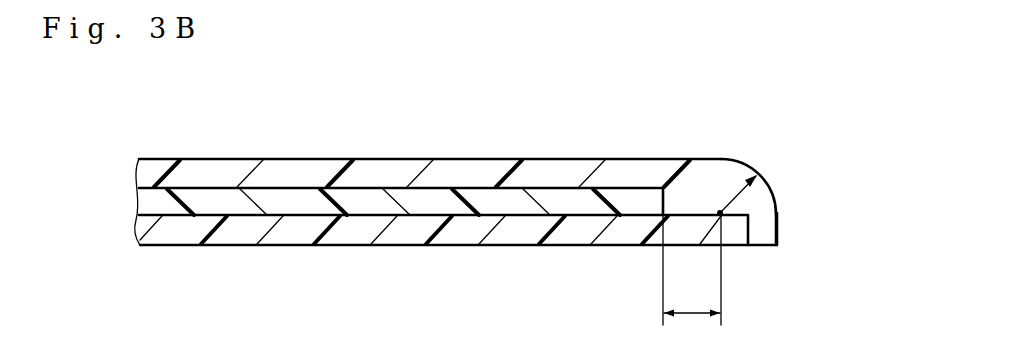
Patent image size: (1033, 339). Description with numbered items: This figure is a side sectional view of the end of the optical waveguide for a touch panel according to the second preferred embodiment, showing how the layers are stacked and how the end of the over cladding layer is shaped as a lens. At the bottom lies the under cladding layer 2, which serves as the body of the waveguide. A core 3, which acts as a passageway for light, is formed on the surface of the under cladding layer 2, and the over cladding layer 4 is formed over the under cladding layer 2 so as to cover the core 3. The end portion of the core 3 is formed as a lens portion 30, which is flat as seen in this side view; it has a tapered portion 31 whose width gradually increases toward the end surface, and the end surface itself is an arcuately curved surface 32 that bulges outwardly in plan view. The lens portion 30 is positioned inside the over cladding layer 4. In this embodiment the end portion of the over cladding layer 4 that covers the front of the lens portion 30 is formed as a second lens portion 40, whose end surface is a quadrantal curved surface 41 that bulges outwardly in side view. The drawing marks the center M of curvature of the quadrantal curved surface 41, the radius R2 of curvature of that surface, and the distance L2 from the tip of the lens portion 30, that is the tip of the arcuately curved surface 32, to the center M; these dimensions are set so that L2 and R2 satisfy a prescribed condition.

The under cladding layer 2 is at (742, 228).
The core 3 is at (300, 202).
The over cladding layer 4 is at (489, 175).
The lens portion 30 is at (702, 96).
The tapered portion 31 is at (488, 197).
The arcuately curved surface 32 is at (667, 190).
The second lens portion 40 is at (760, 198).
The quadrantal curved surface 41 is at (773, 193).
The center of curvature M is at (720, 211).
The radius of curvature R2 is at (732, 199).
The distance from lens tip to center of curvature L2 is at (692, 270).